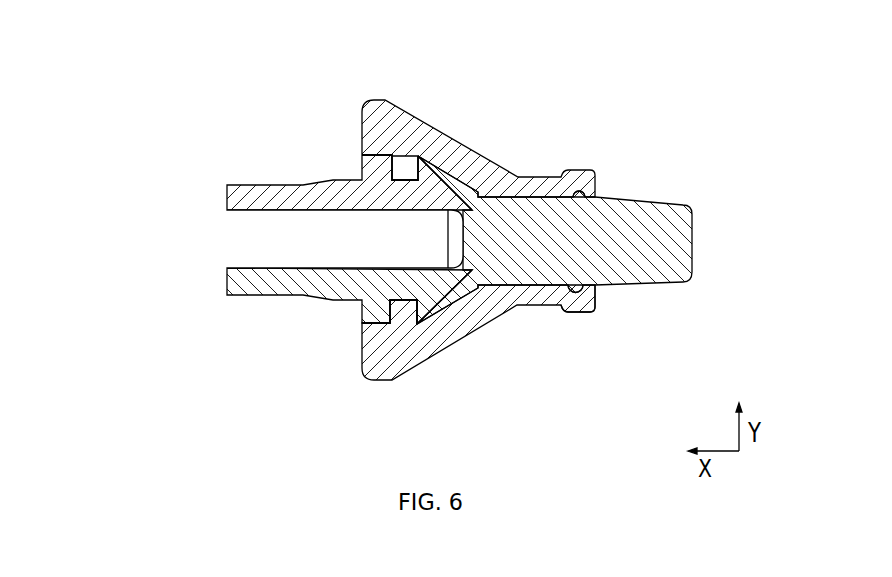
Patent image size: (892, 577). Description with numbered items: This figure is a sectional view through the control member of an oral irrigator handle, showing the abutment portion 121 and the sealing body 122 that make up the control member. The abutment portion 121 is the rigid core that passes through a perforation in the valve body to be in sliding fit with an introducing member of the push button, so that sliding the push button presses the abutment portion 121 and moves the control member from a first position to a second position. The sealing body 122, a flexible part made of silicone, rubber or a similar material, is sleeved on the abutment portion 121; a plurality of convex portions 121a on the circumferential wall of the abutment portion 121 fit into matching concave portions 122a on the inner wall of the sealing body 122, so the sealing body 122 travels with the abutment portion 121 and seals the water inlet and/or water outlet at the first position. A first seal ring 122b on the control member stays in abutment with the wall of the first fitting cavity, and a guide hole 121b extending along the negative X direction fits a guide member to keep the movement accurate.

The abutment portion 121 is at (645, 263).
The convex portions 121a is at (445, 182).
The guide hole 121b is at (327, 243).
The sealing body 122 is at (415, 335).
The concave portions 122a is at (427, 149).
The first seal ring 122b is at (577, 307).